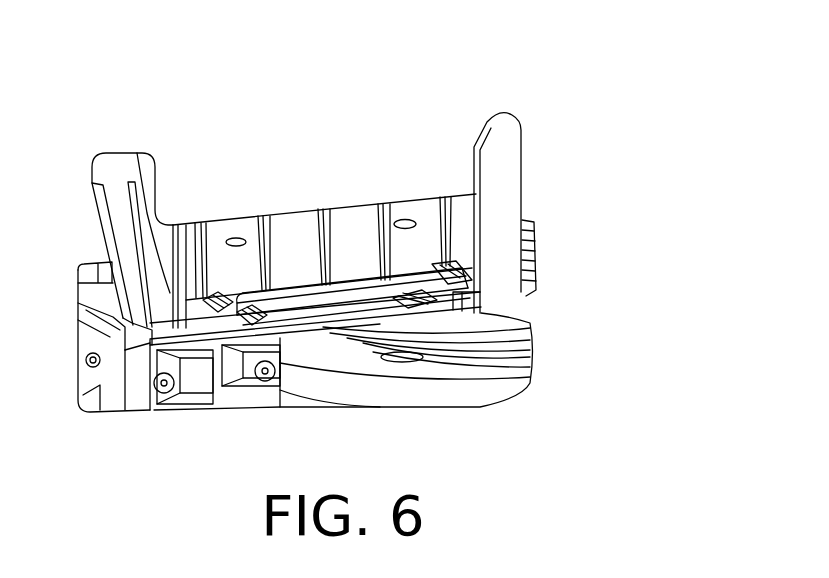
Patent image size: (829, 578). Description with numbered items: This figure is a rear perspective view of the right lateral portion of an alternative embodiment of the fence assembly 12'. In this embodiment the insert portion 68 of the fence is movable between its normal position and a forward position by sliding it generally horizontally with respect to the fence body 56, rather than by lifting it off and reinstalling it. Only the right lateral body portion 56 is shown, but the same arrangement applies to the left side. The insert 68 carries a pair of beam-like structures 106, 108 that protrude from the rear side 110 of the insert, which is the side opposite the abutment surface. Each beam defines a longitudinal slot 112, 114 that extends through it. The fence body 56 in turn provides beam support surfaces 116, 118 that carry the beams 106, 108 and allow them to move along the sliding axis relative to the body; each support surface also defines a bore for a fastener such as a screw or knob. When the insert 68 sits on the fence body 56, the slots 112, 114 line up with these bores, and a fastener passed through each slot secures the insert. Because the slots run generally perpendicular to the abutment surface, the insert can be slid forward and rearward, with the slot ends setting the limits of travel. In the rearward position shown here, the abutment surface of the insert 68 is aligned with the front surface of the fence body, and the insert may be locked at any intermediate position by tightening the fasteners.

The fence assembly 12' is at (355, 214).
The fence body 56 is at (158, 288).
The insert portion 68 is at (297, 230).
The beam-like structure 106 is at (137, 153).
The beam-like structure 108 is at (475, 282).
The rear side 110 is at (367, 240).
The longitudinal slot 112 is at (222, 290).
The longitudinal slot 114 is at (453, 263).
The beam support surface 116 is at (256, 338).
The beam support surface 118 is at (513, 290).